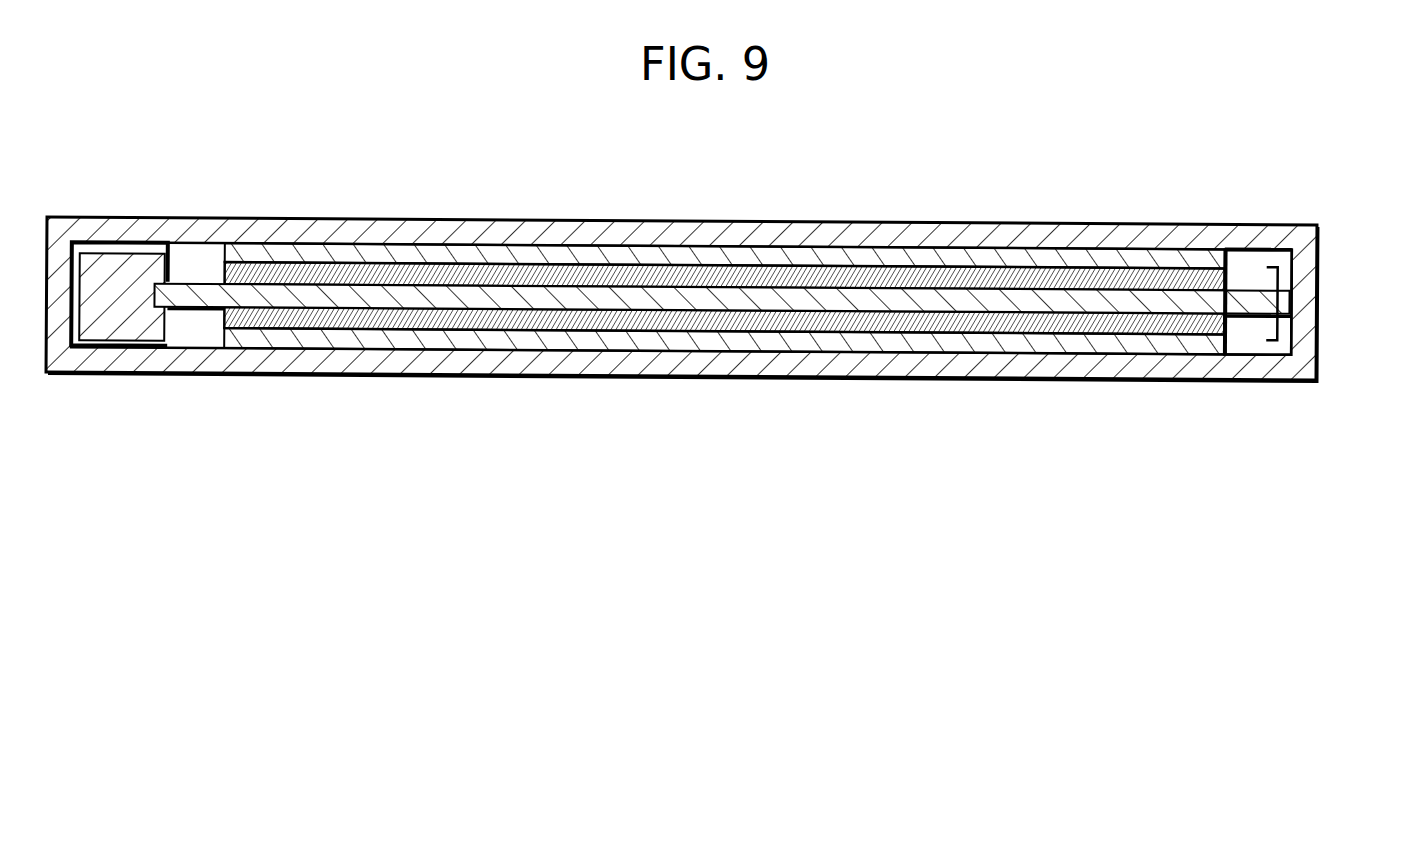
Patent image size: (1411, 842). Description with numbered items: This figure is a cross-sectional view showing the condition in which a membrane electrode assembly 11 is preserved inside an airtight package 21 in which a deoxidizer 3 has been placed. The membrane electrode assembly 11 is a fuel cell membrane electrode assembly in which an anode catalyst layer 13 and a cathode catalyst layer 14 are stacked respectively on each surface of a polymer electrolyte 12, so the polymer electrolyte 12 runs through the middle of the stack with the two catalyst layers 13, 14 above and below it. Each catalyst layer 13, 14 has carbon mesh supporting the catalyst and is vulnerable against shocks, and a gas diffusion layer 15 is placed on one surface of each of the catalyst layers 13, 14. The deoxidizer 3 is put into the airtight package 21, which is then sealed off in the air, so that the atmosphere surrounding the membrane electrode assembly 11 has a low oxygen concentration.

The deoxidizer 3 is at (123, 322).
The membrane electrode assembly 11 is at (1280, 303).
The polymer electrolyte 12 is at (192, 290).
The anode catalyst layer 13 is at (255, 270).
The cathode catalyst layer 14 is at (252, 338).
The gas diffusion layer 15 is at (638, 340).
The airtight package 21 is at (395, 225).